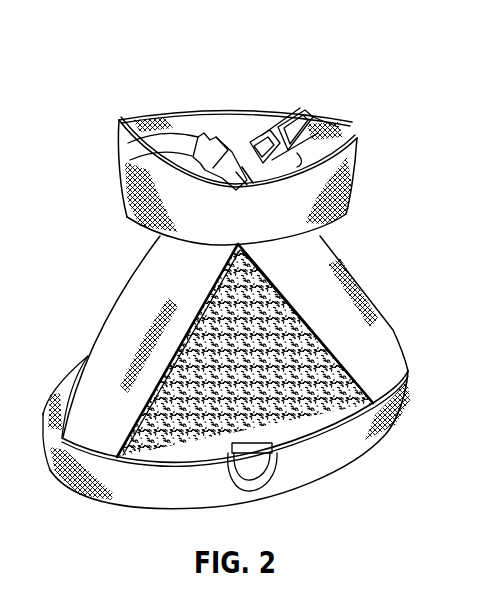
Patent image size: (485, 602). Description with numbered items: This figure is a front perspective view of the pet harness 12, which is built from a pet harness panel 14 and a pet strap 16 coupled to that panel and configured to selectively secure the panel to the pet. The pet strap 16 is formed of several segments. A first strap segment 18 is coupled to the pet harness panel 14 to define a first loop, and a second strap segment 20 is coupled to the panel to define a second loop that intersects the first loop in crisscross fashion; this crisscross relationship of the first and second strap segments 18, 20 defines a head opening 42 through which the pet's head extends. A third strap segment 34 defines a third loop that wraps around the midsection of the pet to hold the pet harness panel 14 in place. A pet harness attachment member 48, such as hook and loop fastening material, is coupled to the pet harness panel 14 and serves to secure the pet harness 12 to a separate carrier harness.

The pet harness 12 is at (226, 278).
The pet harness panel 14 is at (310, 405).
The pet strap 16 is at (343, 133).
The first strap segment 18 is at (263, 140).
The second strap segment 20 is at (180, 130).
The third strap segment 34 is at (63, 384).
The head opening 42 is at (280, 127).
The pet harness attachment member 48 is at (287, 397).